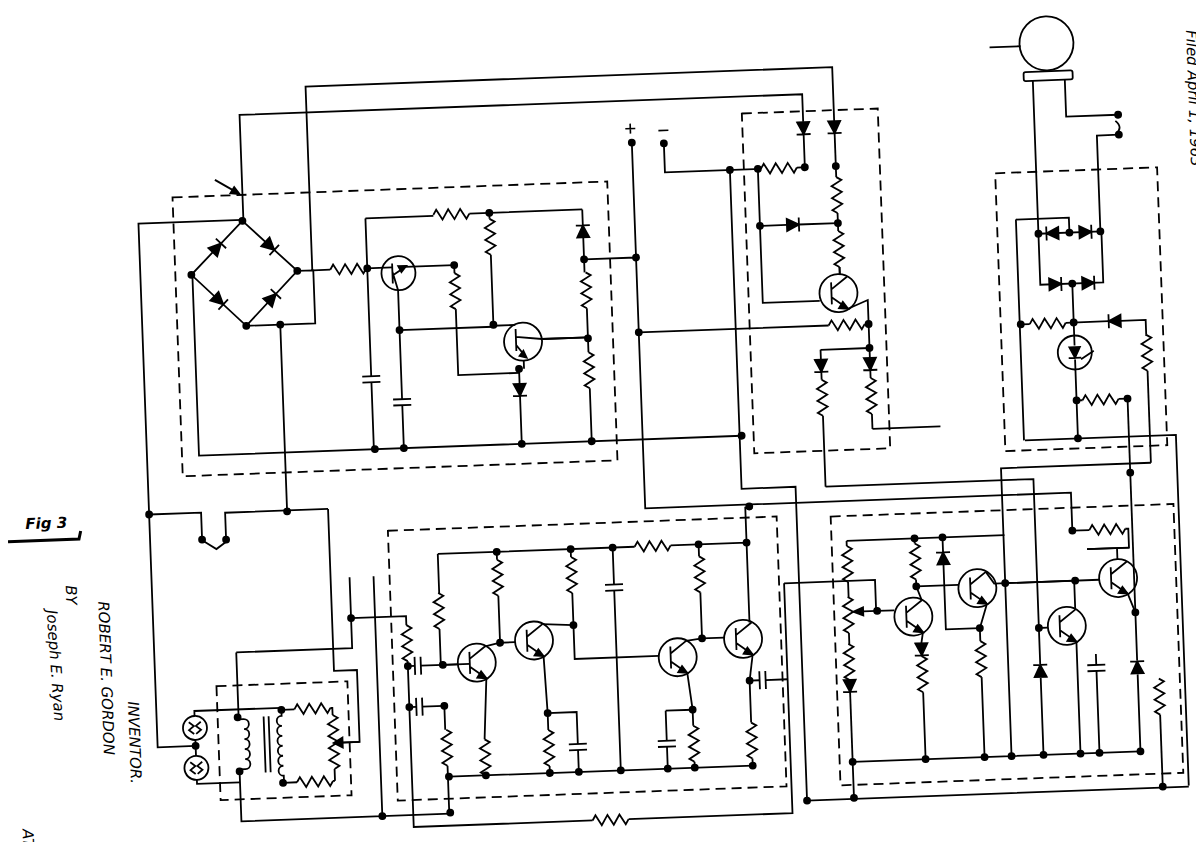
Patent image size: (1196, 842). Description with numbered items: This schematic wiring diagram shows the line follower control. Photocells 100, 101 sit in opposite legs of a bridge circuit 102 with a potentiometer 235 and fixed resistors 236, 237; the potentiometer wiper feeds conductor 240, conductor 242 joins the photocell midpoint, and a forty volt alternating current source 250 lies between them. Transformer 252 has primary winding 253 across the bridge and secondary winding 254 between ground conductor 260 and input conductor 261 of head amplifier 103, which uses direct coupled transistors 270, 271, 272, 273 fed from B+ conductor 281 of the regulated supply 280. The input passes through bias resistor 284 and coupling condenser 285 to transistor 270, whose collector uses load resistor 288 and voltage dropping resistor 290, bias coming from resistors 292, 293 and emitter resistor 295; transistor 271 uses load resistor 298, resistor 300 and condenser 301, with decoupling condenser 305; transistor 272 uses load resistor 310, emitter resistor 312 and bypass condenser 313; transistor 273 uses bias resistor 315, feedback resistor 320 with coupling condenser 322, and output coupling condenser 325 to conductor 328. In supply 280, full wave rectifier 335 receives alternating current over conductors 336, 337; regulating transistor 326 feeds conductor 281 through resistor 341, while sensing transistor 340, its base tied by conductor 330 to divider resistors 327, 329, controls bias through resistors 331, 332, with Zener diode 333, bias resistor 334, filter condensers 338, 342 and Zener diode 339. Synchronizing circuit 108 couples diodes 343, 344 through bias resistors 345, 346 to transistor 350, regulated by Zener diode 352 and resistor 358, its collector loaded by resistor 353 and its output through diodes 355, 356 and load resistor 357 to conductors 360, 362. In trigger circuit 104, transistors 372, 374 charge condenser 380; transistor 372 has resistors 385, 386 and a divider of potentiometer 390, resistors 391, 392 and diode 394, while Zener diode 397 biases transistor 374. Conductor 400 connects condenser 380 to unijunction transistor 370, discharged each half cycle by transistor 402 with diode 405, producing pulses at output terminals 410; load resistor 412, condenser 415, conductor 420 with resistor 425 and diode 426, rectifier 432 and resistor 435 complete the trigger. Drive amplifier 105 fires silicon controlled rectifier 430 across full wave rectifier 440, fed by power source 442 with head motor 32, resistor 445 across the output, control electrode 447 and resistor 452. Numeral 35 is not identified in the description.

The head motor 32 is at (1085, 54).
The power supply 35 is at (213, 183).
The photocell 100 is at (174, 702).
The photocell 101 is at (172, 772).
The bridge circuit 102 is at (212, 790).
The head amplifier 103 is at (430, 506).
The head trigger circuit 104 is at (1124, 520).
The head drive amplifier 105 is at (1000, 165).
The synchronizing circuit 108 is at (887, 164).
The potentiometer 235 is at (321, 748).
The fixed resistor 236 is at (292, 686).
The fixed resistor 237 is at (308, 770).
The conductor 240 is at (324, 616).
The input conductor 242 is at (152, 748).
The alternating current source 250 is at (210, 538).
The transformer 252 is at (264, 697).
The primary winding 253 is at (287, 741).
The secondary winding 254 is at (224, 700).
The ground conductor 260 is at (334, 811).
The input conductor 261 is at (248, 636).
The transistor 270 is at (484, 672).
The transistor 271 is at (535, 670).
The transistor 272 is at (662, 648).
The transistor 273 is at (730, 624).
The B+ supply 280 is at (178, 187).
The B+ conductor 281 is at (699, 336).
The bias resistor 284 is at (410, 602).
The coupling condenser 285 is at (418, 654).
The load resistor 288 is at (496, 582).
The voltage dropping resistor 290 is at (638, 546).
The resistor 292 is at (435, 596).
The resistor 293 is at (462, 728).
The emitter resistor 295 is at (476, 755).
The load resistor 298 is at (612, 602).
The resistor 300 is at (532, 734).
The condenser 301 is at (572, 740).
The decoupling condenser 305 is at (618, 588).
The load resistor 310 is at (692, 570).
The emitter resistor 312 is at (740, 744).
The bypass condenser 313 is at (653, 740).
The voltage bias resistor 315 is at (730, 730).
The feedback resistor 320 is at (624, 810).
The coupling condenser 322 is at (597, 705).
The coupling condenser 325 is at (738, 688).
The regulating transistor 326 is at (411, 284).
The resistor 327 is at (588, 296).
The conductor 328 is at (898, 585).
The resistor 329 is at (587, 374).
The conductor 330 is at (565, 349).
The resistor 331 is at (474, 201).
The resistor 332 is at (500, 233).
The Zener diode 333 is at (583, 236).
The bias resistor 334 is at (454, 300).
The full wave rectifier 335 is at (258, 272).
The conductor 336 is at (284, 422).
The conductor 337 is at (144, 314).
The filter condenser 338 is at (413, 394).
The Zener diode 339 is at (512, 402).
The sensing transistor 340 is at (541, 335).
The resistor 341 is at (353, 279).
The filter condenser 342 is at (371, 360).
The diode 343 is at (810, 136).
The diode 344 is at (852, 135).
The voltage bias resistor 345 is at (840, 212).
The voltage bias resistor 346 is at (850, 253).
The synchronizing transistor 350 is at (824, 283).
The Zener diode 352 is at (806, 234).
The bias resistor 353 is at (842, 343).
The diode 355 is at (882, 372).
The diode 356 is at (817, 374).
The load resistor 357 is at (884, 398).
The resistor 358 is at (819, 407).
The conductor 360 is at (928, 433).
The conductor 362 is at (958, 492).
The unijunction transistor 370 is at (1104, 546).
The transistor 372 is at (900, 652).
The transistor 374 is at (976, 584).
The condenser 380 is at (972, 718).
The constant voltage dropping resistor 385 is at (934, 552).
The bias resistor 386 is at (908, 708).
The potentiometer 390 is at (867, 619).
The resistor 391 is at (854, 554).
The resistor 392 is at (852, 676).
The diode 394 is at (850, 696).
The Zener diode 397 is at (946, 568).
The conductor 400 is at (1102, 581).
The transistor 402 is at (1044, 628).
The diode 405 is at (1048, 706).
The output terminals 410 is at (1117, 505).
The load resistor 412 is at (1096, 540).
The decoupling condenser 415 is at (1109, 697).
The conductor 420 is at (1054, 481).
The resistor 425 is at (1148, 340).
The diode 426 is at (1126, 322).
The silicon controlled rectifier 430 is at (1070, 384).
The rectifier 432 is at (1124, 683).
The resistor 435 is at (1144, 734).
The full wave rectifier 440 is at (1094, 288).
The source of power 442 is at (1130, 170).
The resistor 445 is at (1062, 305).
The control electrode 447 is at (1104, 382).
The resistor 452 is at (1104, 415).